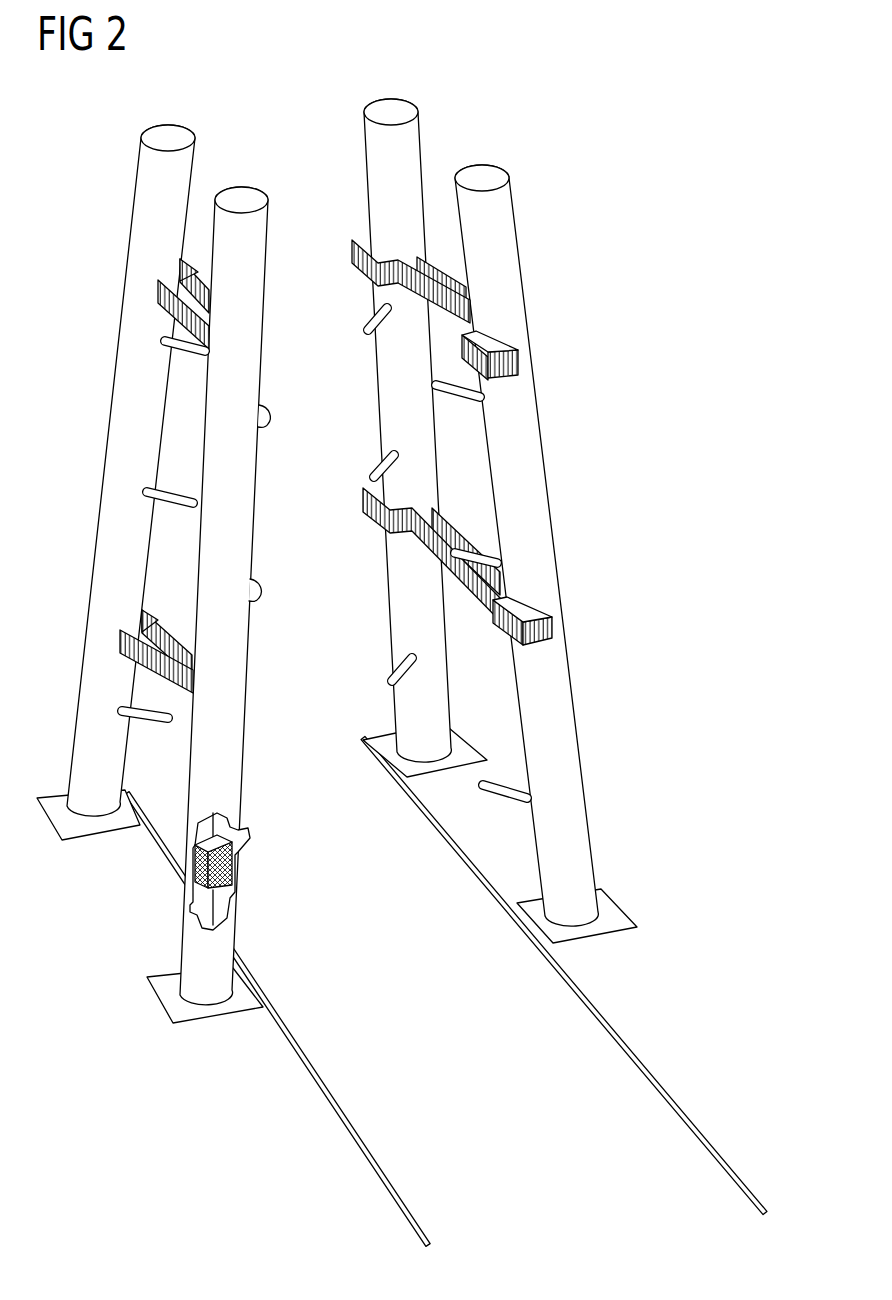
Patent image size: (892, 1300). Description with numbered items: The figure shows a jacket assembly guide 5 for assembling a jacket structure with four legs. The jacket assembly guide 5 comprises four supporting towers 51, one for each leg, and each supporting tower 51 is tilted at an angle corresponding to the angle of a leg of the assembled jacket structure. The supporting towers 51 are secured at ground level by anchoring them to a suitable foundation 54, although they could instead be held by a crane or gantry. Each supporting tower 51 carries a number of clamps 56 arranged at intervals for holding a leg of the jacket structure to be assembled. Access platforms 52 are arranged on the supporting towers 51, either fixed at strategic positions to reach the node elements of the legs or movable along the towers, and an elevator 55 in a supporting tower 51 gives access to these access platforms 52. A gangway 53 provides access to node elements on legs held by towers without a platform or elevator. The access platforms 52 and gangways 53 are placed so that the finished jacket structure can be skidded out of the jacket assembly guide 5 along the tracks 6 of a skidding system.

The jacket assembly guide 5 is at (505, 121).
The tracks 6 is at (643, 1063).
The supporting tower 51 is at (148, 214).
The access platform 52 is at (183, 260).
The gangway 53 is at (158, 679).
The foundation 54 is at (612, 917).
The elevator 55 is at (222, 870).
The clamp 56 is at (512, 790).